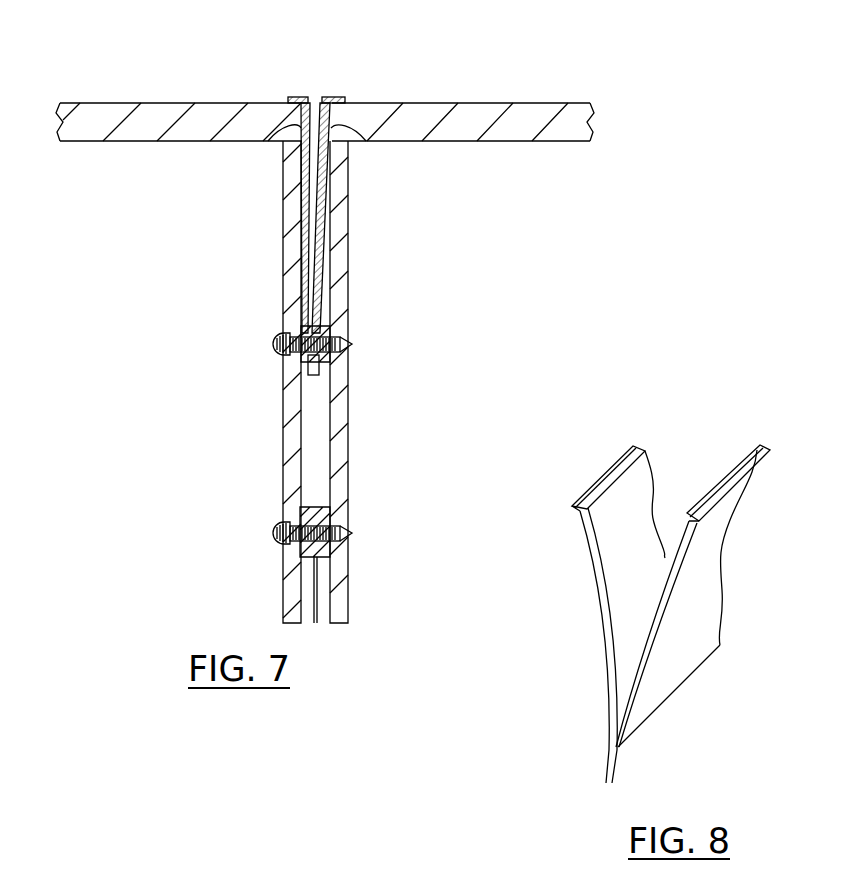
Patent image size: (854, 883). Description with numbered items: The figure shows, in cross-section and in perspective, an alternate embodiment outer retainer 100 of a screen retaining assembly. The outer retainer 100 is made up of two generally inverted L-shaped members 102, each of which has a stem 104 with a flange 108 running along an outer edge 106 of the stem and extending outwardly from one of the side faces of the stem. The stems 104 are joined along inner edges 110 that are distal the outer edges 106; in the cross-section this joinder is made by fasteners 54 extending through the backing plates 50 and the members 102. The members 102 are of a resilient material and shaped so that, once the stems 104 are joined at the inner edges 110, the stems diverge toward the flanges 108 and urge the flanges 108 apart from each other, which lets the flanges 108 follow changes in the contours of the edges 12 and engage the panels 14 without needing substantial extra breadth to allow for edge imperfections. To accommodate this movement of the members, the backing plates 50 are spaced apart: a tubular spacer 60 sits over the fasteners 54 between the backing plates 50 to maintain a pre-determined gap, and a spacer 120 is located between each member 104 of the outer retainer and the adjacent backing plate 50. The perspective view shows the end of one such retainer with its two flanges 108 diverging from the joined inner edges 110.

In FIG. 7, the edges 12 is at (298, 127).
In FIG. 7, the panels 14 is at (106, 122).
In FIG. 7, the backing plates 50 is at (292, 393).
In FIG. 7, the fasteners 54 is at (358, 343).
In FIG. 7, the spacer 60 is at (315, 605).
In FIG. 7, the outer retainer 100 is at (332, 72).
In FIG. 8, the outer retainer 100 is at (779, 420).
In FIG. 8, the members 102 is at (578, 619).
In FIG. 7, the stem 104 is at (307, 232).
In FIG. 8, the stem 104 is at (641, 533).
In FIG. 8, the outer edge 106 is at (580, 517).
In FIG. 7, the flange 108 is at (297, 97).
In FIG. 8, the flange 108 is at (603, 478).
In FIG. 8, the inner edges 110 is at (609, 783).
In FIG. 7, the spacer 120 is at (300, 328).